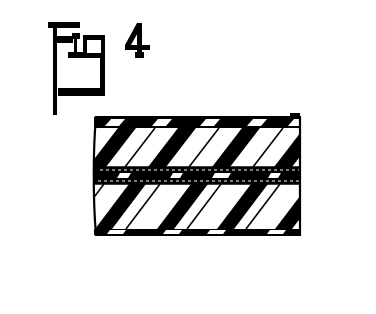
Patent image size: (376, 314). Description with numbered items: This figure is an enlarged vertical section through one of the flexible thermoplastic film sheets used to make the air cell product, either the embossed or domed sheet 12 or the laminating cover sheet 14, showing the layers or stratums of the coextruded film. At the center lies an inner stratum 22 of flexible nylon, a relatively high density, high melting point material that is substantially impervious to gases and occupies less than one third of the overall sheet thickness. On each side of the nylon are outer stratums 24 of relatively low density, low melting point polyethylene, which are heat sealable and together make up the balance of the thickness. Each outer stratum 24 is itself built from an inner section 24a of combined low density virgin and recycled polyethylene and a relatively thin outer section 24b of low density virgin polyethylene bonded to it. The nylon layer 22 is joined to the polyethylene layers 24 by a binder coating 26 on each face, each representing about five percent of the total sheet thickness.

The embossed sheet 12 is at (300, 117).
The cover sheet 14 is at (174, 172).
The inner stratum 22 is at (94, 174).
The outer stratums 24 is at (101, 117).
The inner section 24a is at (230, 143).
The outer section 24b is at (163, 117).
The binder coating 26 is at (95, 168).